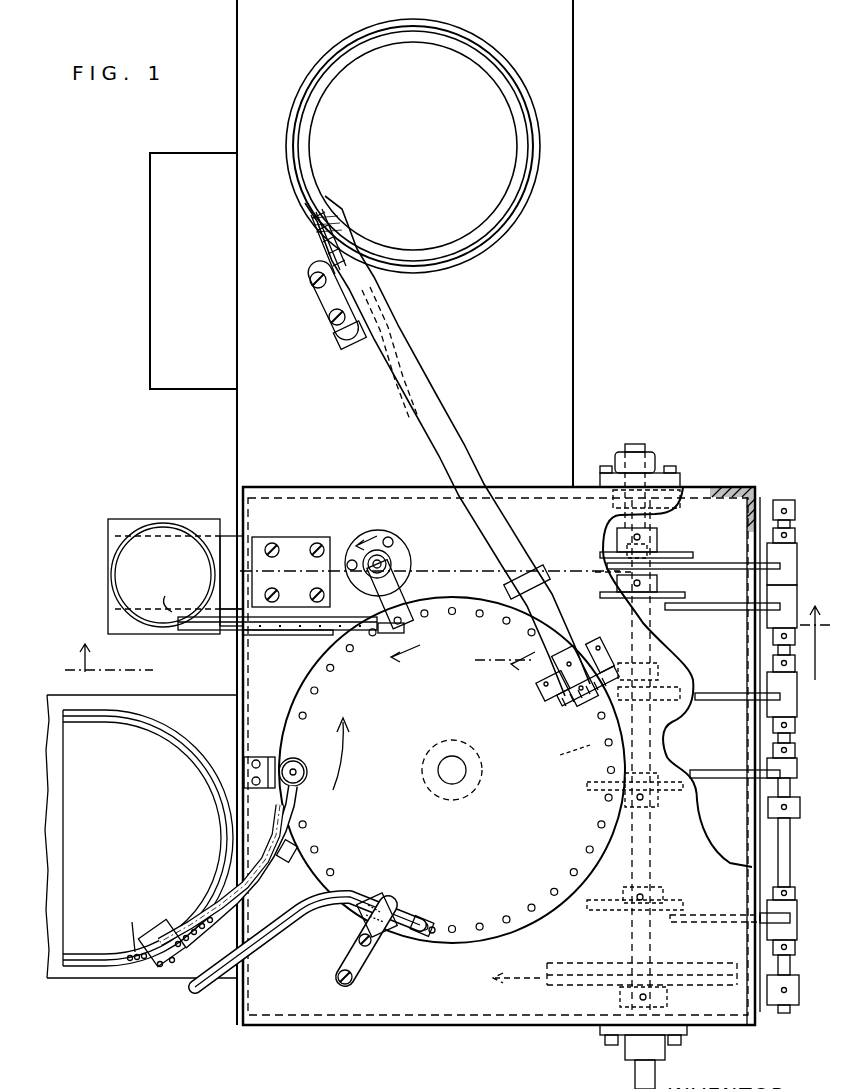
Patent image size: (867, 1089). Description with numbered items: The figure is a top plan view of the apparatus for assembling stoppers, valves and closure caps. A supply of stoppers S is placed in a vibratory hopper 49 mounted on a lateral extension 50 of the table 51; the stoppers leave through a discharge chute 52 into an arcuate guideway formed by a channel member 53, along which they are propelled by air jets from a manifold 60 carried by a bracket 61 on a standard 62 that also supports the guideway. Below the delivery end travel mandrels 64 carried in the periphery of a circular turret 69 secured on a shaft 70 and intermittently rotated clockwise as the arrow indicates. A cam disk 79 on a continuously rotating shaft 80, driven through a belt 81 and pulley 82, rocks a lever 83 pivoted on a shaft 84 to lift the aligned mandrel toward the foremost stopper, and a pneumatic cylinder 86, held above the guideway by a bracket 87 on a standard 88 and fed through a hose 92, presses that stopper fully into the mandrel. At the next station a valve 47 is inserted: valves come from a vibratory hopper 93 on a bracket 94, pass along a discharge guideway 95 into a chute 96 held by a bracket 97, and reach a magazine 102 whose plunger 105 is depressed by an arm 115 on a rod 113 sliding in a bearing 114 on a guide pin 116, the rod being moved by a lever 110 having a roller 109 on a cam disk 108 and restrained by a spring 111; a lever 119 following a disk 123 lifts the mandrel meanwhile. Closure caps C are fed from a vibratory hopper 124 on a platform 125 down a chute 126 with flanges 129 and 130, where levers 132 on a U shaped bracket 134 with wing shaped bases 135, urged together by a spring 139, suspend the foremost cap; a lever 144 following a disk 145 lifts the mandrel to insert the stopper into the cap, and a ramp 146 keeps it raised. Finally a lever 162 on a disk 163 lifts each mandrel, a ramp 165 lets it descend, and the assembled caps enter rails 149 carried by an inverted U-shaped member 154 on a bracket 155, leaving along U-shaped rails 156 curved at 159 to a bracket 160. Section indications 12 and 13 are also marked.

The vibratory hopper 124 is at (437, 185).
The platform 125 is at (537, 368).
The chute 126 is at (472, 462).
The closure cap C is at (340, 265).
The table 51 is at (401, 490).
The vibratory hopper 93 is at (160, 536).
The bracket 94 is at (215, 528).
The valve 47 is at (165, 596).
The discharge guideway 95 is at (210, 628).
The lateral extension 50 is at (175, 700).
The hopper 49 is at (113, 940).
The section line 12- 12 is at (435, 638).
The spring 111 is at (258, 548).
The rod 113 is at (350, 545).
The cam disc / section line 13- 13 is at (430, 593).
The elongated bearing 114 is at (392, 556).
The guide pin 116 is at (386, 566).
The plunger 105 is at (400, 592).
The magazine 102 is at (392, 634).
The arm 115 is at (378, 598).
The bracket 97 is at (300, 630).
The chute 96 is at (255, 636).
The circular turret 69 is at (531, 880).
The mandrels 64 is at (478, 617).
The shaft 70 is at (458, 777).
The flanges 129 is at (548, 608).
The U shaped bracket 134 is at (590, 618).
The flanges 130 is at (548, 668).
The wing shaped bases 135 is at (552, 700).
The spring 139 is at (598, 700).
The ramp 146 is at (575, 753).
The cam disk 108 is at (692, 552).
The roller 109 is at (655, 553).
The lever 110 is at (540, 565).
The disk 123 is at (690, 588).
The lever 119 is at (690, 612).
The shaft 80 is at (655, 612).
The disk 145 is at (690, 680).
The lever 144 is at (722, 703).
The levers 132 is at (655, 735).
The lever 83 is at (725, 770).
The cam disk 79 is at (680, 795).
The disk 163 is at (672, 902).
The lever 162 is at (702, 920).
The shaft 84 is at (784, 500).
The belt 81 is at (532, 988).
The pulley 82 is at (578, 1010).
The bracket 87 is at (276, 760).
The standard 88 is at (246, 758).
The hose 92 is at (300, 760).
The cylinder 86 is at (310, 780).
The channel member 53 is at (284, 820).
The manifold 60 is at (268, 888).
The standard 62 is at (292, 862).
The discharge chute 52 is at (208, 923).
The stopper S is at (190, 914).
The U-shaped rails 156 is at (296, 940).
The bracket 160 is at (232, 990).
The ramp 165 is at (430, 918).
The bracket 155 is at (368, 968).
The inverted U-shaped member 154 is at (385, 902).
The rails 149 is at (425, 912).
The curved portion 159 is at (345, 915).
The bracket 61 is at (305, 880).